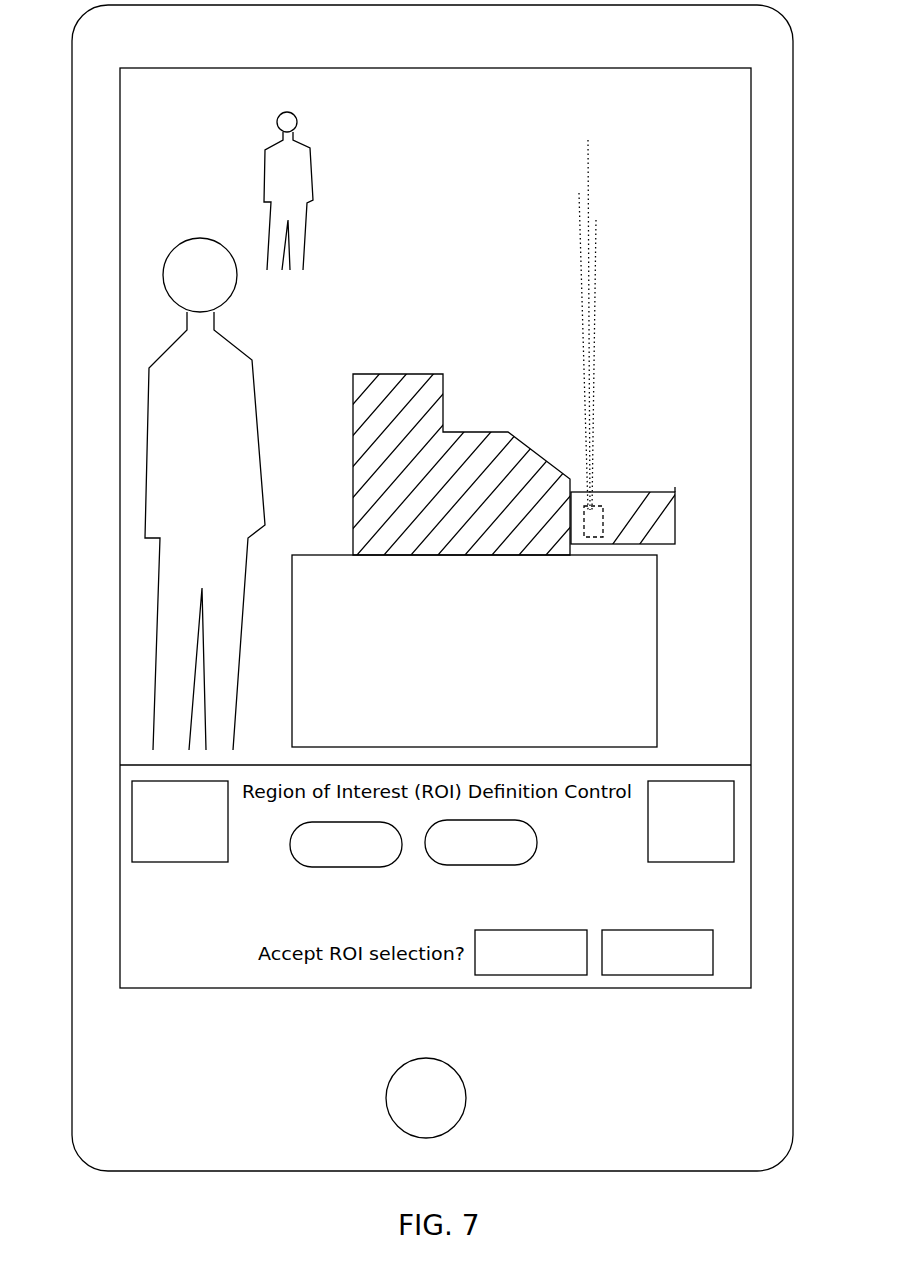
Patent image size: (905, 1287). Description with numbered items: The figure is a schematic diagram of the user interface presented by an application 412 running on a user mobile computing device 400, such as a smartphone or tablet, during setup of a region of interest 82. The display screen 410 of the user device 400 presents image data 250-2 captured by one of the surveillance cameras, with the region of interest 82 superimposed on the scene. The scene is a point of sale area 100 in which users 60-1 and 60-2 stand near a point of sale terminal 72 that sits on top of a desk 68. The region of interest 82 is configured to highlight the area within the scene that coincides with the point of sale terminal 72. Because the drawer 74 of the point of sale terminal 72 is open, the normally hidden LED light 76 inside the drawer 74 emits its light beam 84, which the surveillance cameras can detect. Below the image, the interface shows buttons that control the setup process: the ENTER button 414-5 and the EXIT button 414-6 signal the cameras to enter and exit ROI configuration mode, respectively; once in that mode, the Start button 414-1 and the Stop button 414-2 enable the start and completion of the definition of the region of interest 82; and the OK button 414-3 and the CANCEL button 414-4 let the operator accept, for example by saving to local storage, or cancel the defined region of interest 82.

The user mobile computing device 400 is at (72, 980).
The display screen 410 is at (358, 97).
The application 412 is at (672, 168).
The image data 250-2 is at (612, 142).
The point of sale area 100 is at (402, 260).
The user 60-1 is at (222, 336).
The user 60-2 is at (310, 177).
The light beam 84 is at (580, 260).
The point of sale terminal 72 is at (464, 461).
The LED light 76 is at (606, 514).
The drawer 74 is at (663, 532).
The region of interest 82 is at (428, 525).
The desk 68 is at (657, 652).
The Start button 414-1 is at (290, 855).
The Stop button 414-2 is at (537, 845).
The OK button 414-3 is at (553, 975).
The CANCEL button 414-4 is at (668, 975).
The ENTER button 414-5 is at (148, 862).
The EXIT button 414-6 is at (688, 862).